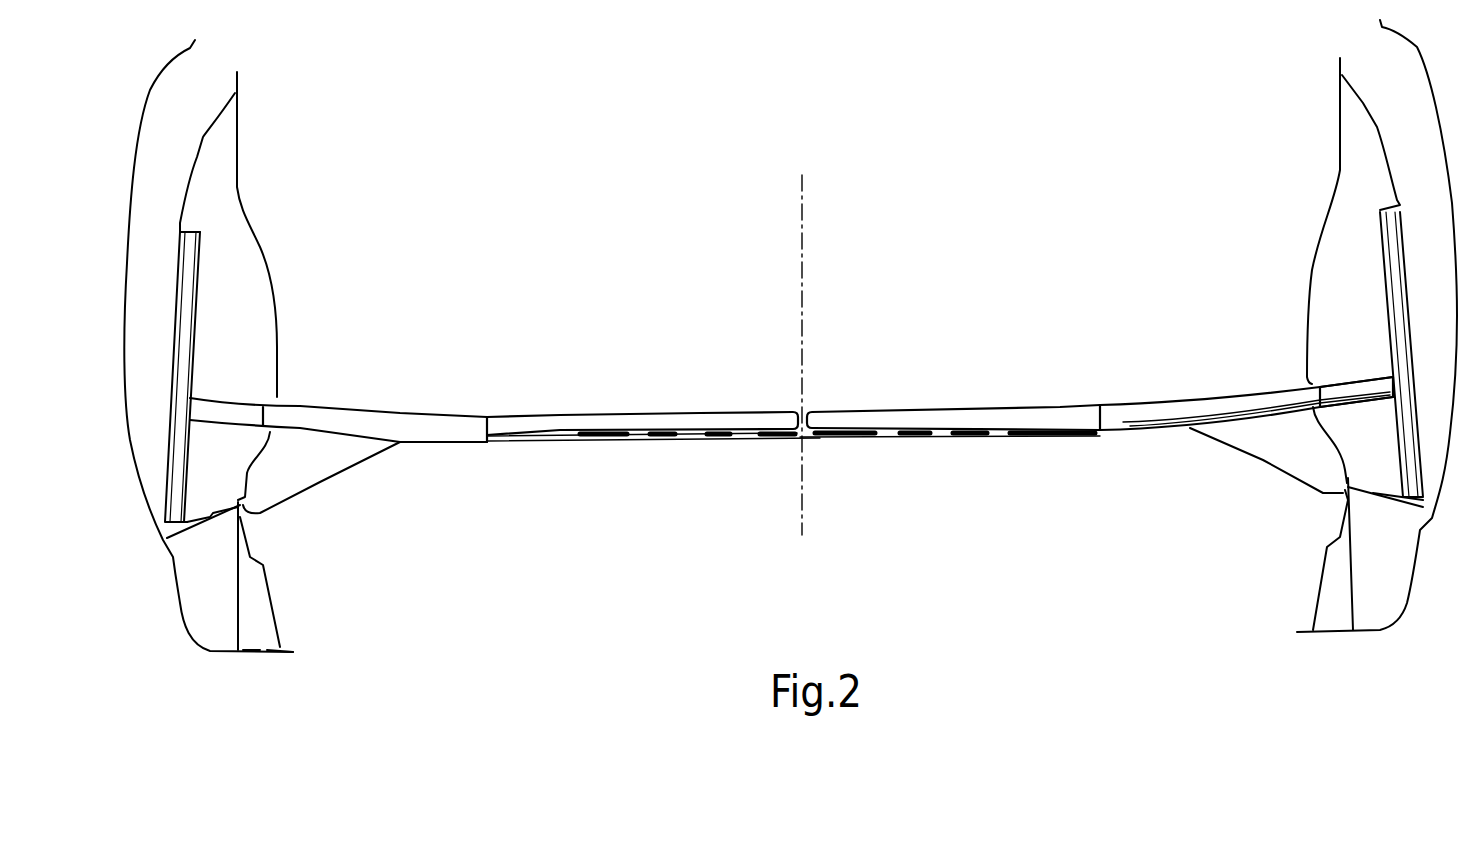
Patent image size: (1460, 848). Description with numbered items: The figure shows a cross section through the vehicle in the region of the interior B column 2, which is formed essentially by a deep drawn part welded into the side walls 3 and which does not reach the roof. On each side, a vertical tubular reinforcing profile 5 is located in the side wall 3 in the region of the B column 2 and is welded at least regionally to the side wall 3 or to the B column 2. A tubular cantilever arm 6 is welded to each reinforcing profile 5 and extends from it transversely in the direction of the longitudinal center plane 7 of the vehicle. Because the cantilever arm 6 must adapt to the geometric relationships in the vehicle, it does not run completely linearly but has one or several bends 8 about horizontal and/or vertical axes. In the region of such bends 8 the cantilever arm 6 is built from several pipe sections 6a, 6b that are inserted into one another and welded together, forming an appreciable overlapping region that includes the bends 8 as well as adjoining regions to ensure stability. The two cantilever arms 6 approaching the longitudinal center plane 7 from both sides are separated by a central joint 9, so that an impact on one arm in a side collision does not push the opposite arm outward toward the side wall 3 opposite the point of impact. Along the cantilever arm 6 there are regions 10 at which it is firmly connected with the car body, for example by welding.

The B column 2 is at (1367, 267).
The side wall 3 is at (1398, 89).
The reinforcing profile 5 is at (1393, 227).
The cantilever arm 6 is at (791, 415).
The pipe section 6a is at (950, 479).
The pipe section 6b is at (1347, 397).
The longitudinal center plane 7 is at (803, 237).
The bend 8 is at (1183, 403).
The central joint 9 is at (812, 398).
The region 10 is at (857, 443).